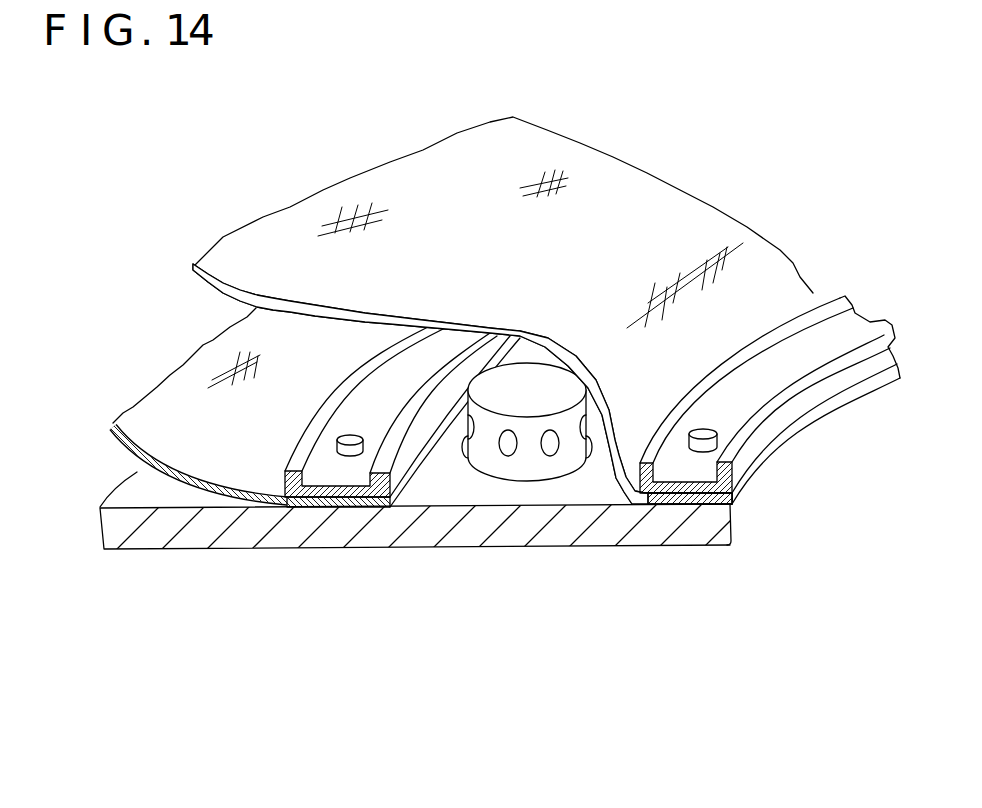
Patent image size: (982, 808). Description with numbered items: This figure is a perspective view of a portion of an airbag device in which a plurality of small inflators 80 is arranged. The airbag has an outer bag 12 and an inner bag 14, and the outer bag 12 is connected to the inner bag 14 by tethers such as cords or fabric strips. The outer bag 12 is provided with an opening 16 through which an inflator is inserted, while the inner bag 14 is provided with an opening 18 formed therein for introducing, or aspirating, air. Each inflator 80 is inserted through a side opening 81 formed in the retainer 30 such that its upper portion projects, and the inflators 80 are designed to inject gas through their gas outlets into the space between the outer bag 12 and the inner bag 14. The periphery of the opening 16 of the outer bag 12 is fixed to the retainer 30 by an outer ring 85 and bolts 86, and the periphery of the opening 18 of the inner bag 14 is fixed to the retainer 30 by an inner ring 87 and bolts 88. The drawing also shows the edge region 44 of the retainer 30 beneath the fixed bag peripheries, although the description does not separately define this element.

The outer bag 12 is at (180, 378).
The inner bag 14 is at (300, 220).
The opening 16 is at (402, 478).
The opening 18 is at (737, 490).
The retainer 30 is at (273, 550).
The edge of base plate 44 is at (738, 522).
The inflator 80 is at (527, 465).
The side opening 81 is at (563, 461).
The outer ring 85 is at (340, 488).
The bolt 86 is at (350, 435).
The inner ring 87 is at (771, 376).
The bolt 88 is at (719, 425).